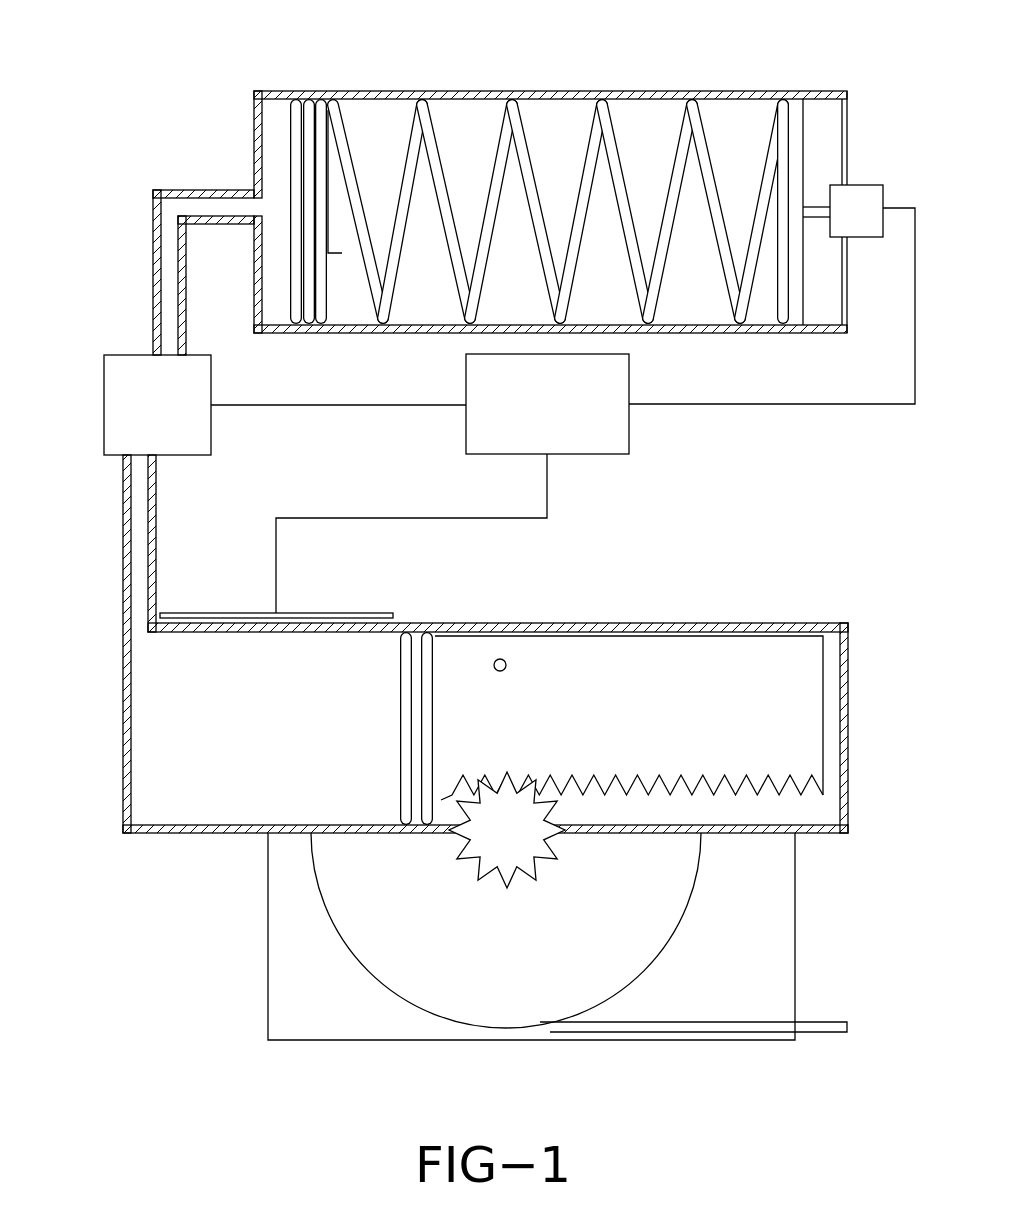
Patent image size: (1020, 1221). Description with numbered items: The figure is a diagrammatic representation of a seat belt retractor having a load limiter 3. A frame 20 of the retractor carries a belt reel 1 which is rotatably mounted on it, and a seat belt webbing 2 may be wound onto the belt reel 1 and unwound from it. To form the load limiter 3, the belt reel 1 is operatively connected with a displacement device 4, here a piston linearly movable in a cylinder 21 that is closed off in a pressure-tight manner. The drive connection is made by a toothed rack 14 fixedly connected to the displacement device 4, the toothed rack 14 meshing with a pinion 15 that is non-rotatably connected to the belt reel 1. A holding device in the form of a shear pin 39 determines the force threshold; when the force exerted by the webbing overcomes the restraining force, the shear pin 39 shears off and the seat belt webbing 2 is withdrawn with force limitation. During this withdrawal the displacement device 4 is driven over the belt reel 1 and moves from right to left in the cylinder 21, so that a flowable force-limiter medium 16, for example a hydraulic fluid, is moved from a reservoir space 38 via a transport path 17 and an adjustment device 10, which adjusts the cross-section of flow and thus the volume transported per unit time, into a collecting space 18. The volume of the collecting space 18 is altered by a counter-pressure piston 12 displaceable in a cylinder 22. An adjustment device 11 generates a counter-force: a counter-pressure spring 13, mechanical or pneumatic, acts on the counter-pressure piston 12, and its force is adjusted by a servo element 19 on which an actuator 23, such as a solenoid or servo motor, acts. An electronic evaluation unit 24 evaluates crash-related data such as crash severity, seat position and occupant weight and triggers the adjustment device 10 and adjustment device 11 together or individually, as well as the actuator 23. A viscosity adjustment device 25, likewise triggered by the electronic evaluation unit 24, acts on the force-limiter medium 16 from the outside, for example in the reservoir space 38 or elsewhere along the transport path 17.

The belt reel 1 is at (688, 868).
The seat belt webbing 2 is at (813, 1022).
The load limiter 3 is at (464, 698).
The displacement device 4 is at (430, 695).
The adjustment device 10 is at (142, 423).
The adjustment device 11 is at (516, 170).
The counter-pressure piston 12 is at (296, 113).
The counter-pressure spring 13 is at (612, 152).
The toothed rack 14 is at (763, 655).
The pinion 15 is at (497, 862).
The force-limiter medium 16 is at (464, 698).
The transport path 17 is at (175, 272).
The collecting space 18 is at (277, 155).
The servo element 19 is at (803, 138).
The frame 20 is at (322, 1042).
The cylinder 21 is at (215, 835).
The cylinder 22 is at (375, 93).
The actuator 23 is at (860, 205).
The electronic evaluation unit 24 is at (532, 420).
The viscosity adjustment device 25 is at (312, 610).
The reservoir space 38 is at (143, 758).
The shear pin 39 is at (502, 660).